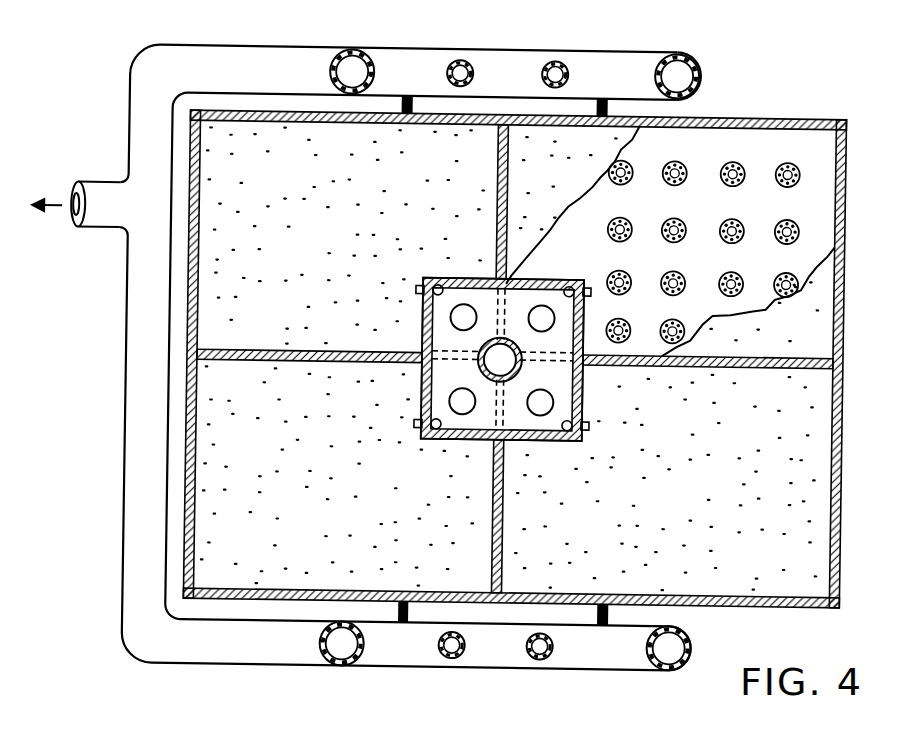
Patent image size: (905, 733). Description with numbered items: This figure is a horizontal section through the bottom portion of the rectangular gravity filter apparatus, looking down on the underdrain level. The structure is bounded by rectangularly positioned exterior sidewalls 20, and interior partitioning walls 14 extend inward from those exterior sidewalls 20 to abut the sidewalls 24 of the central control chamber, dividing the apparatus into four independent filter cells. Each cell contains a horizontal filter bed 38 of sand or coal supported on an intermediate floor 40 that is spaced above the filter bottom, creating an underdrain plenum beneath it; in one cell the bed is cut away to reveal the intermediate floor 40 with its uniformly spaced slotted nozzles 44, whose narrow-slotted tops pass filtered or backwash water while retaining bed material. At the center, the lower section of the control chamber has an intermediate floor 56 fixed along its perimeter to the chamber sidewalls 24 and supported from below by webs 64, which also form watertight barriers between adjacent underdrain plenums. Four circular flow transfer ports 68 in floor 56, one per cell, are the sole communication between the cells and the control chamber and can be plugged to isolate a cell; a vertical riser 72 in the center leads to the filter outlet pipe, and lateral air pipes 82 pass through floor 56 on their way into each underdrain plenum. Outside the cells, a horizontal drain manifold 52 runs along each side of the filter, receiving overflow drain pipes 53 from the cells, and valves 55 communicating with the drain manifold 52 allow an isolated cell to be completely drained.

The interior partitioning walls 14 is at (317, 365).
The exterior sidewalls 20 is at (844, 265).
The chamber sidewalls 24 is at (578, 397).
The filter bed 38 is at (209, 450).
The intermediate floor 40 is at (661, 260).
The slotted nozzles 44 is at (715, 181).
The horizontal drain manifold 52 is at (376, 64).
The overflow drain pipe 53 is at (553, 63).
The valve 55 is at (401, 98).
The intermediate floor 56 is at (518, 417).
The webs 64 is at (507, 312).
The flow transfer ports 68 is at (553, 319).
The vertical riser 72 is at (479, 351).
The lateral air pipes 82 is at (440, 283).